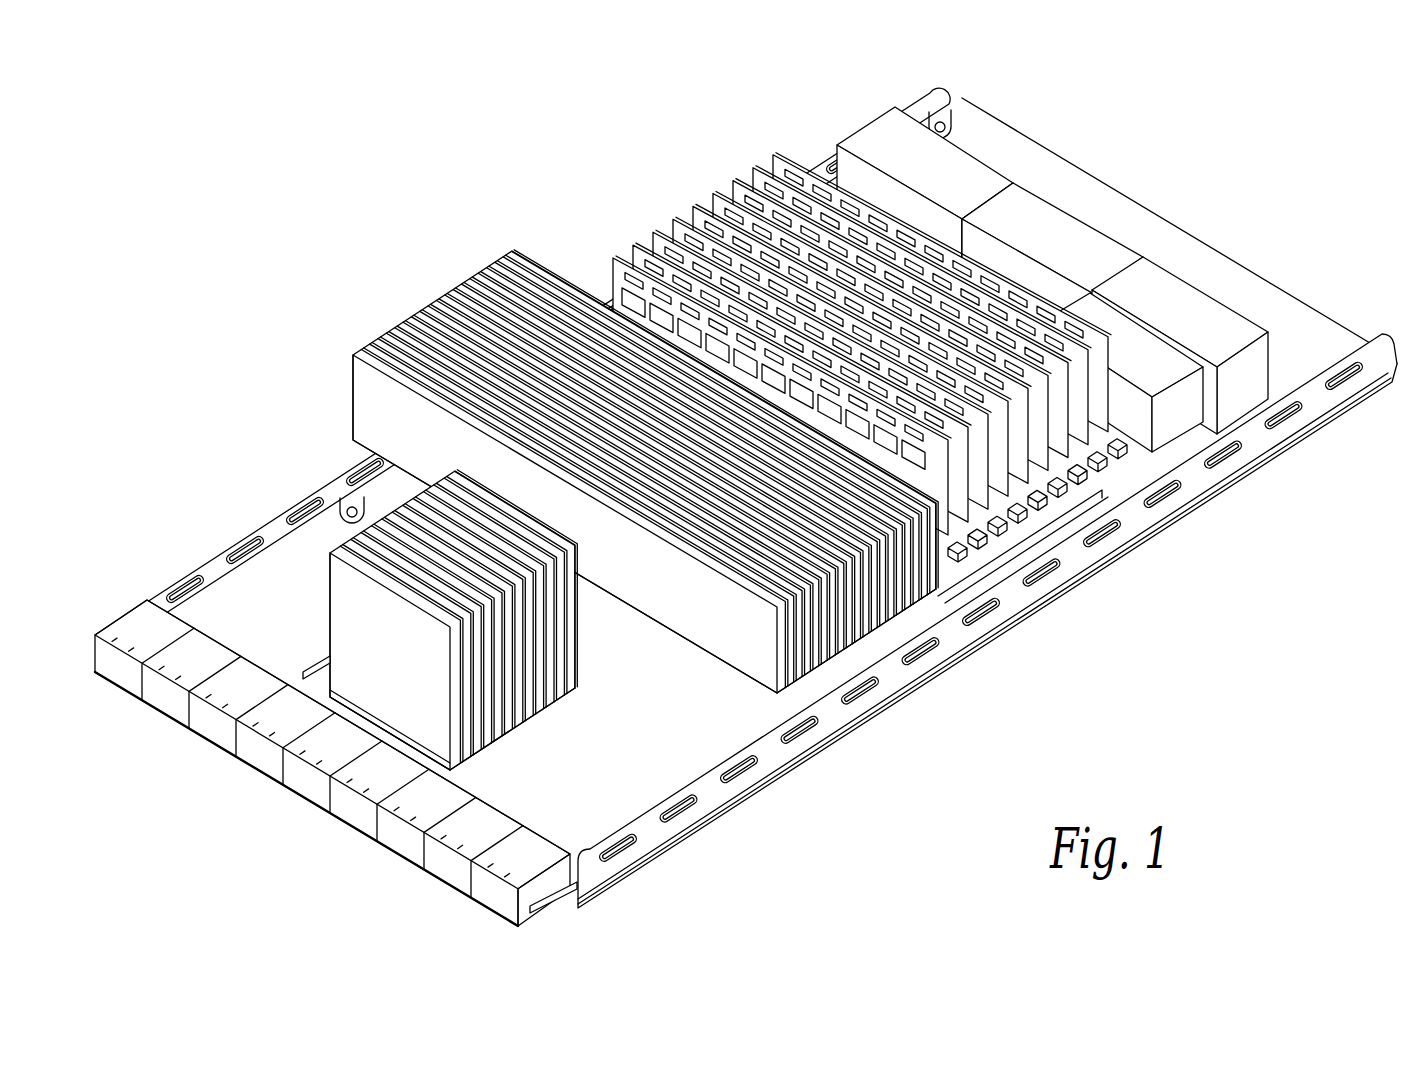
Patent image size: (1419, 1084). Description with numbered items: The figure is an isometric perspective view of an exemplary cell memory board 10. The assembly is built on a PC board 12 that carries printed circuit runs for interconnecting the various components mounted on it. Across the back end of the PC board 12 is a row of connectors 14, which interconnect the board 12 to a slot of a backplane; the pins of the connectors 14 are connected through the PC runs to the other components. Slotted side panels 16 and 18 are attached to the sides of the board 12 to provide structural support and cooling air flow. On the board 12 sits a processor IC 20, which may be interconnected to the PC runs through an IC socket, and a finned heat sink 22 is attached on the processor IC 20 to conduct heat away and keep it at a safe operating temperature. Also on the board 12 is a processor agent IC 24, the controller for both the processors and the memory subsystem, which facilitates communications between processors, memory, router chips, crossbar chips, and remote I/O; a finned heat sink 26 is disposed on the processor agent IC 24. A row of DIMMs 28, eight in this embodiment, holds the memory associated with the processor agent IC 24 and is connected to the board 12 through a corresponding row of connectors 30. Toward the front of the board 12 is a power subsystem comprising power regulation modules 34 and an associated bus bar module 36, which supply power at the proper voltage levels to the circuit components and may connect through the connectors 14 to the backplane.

The cell memory board 10 is at (1119, 151).
The PC board 12 is at (1214, 262).
The connectors 14 is at (357, 815).
The slotted side panel 16 is at (955, 628).
The slotted side panel 18 is at (213, 553).
The processor IC 20 is at (620, 655).
The finned heat sink 22 is at (752, 665).
The processor agent IC 24 is at (318, 661).
The finned heat sink 26 is at (328, 622).
The row of DIMMs 28 is at (738, 153).
The connectors 30 is at (1020, 548).
The power regulation module 34 is at (837, 183).
The bus bar module 36 is at (883, 140).